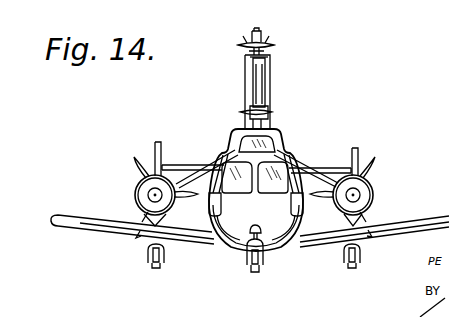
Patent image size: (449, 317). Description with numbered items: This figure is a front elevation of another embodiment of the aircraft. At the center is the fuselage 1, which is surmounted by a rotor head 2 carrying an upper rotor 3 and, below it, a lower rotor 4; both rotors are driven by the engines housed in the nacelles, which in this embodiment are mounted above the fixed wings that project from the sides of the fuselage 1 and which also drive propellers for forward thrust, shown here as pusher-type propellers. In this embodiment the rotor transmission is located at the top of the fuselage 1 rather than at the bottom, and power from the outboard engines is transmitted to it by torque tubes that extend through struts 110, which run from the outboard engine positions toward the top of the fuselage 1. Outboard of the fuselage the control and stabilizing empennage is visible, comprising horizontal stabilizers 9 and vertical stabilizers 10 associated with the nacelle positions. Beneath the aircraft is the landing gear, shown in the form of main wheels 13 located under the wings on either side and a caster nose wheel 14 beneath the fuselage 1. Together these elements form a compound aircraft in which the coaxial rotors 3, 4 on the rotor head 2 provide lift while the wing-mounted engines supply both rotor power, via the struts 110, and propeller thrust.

The fuselage 1 is at (250, 190).
The rotor head 2 is at (280, 78).
The upper rotor 3 is at (275, 46).
The lower rotor 4 is at (273, 112).
The horizontal stabilizers 9 is at (191, 165).
The vertical stabilizers 10 is at (156, 142).
The main wheels 13 is at (156, 269).
The caster nose wheel 14 is at (255, 273).
The struts 110 is at (295, 158).